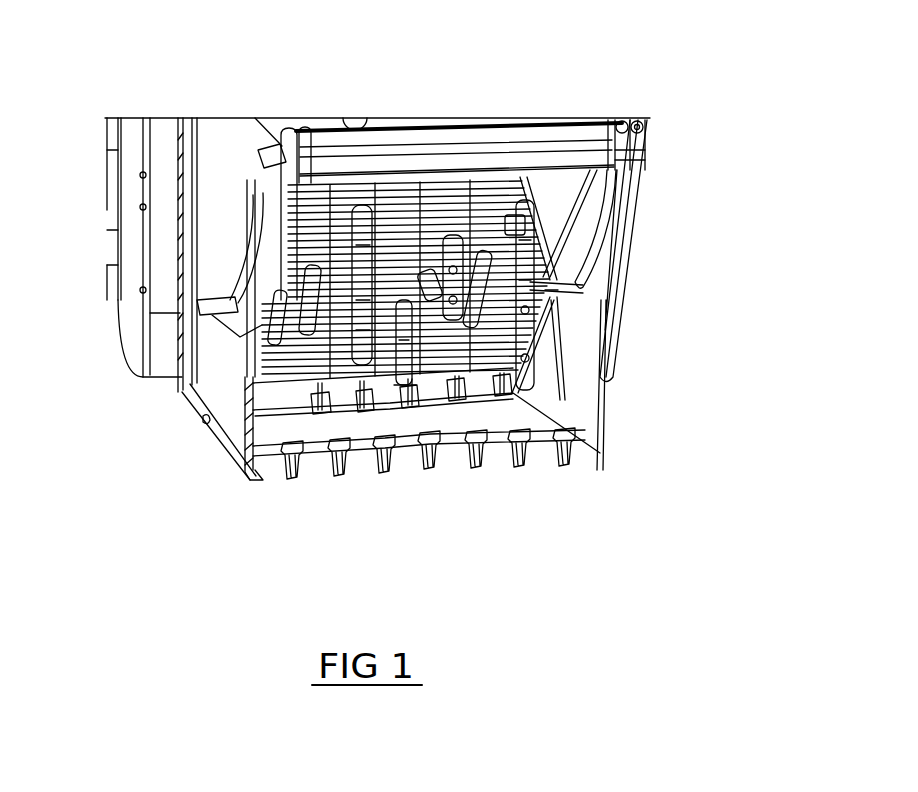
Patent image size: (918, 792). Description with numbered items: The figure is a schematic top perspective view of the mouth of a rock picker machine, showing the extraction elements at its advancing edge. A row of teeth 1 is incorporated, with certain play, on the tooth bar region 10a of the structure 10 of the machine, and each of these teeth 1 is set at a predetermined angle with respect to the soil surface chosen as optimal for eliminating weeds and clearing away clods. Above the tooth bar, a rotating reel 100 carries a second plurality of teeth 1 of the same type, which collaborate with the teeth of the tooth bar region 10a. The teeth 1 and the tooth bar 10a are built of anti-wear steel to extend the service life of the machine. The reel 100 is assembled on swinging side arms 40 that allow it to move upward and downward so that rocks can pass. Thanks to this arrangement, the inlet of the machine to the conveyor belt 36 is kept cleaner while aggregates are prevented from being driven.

The tooth 1 is at (520, 362).
The structure 10 is at (557, 403).
The tooth bar region 10a is at (360, 430).
The conveyor belt 36 is at (332, 412).
The swinging side arm 40 is at (137, 300).
The rotating reel 100 is at (564, 300).